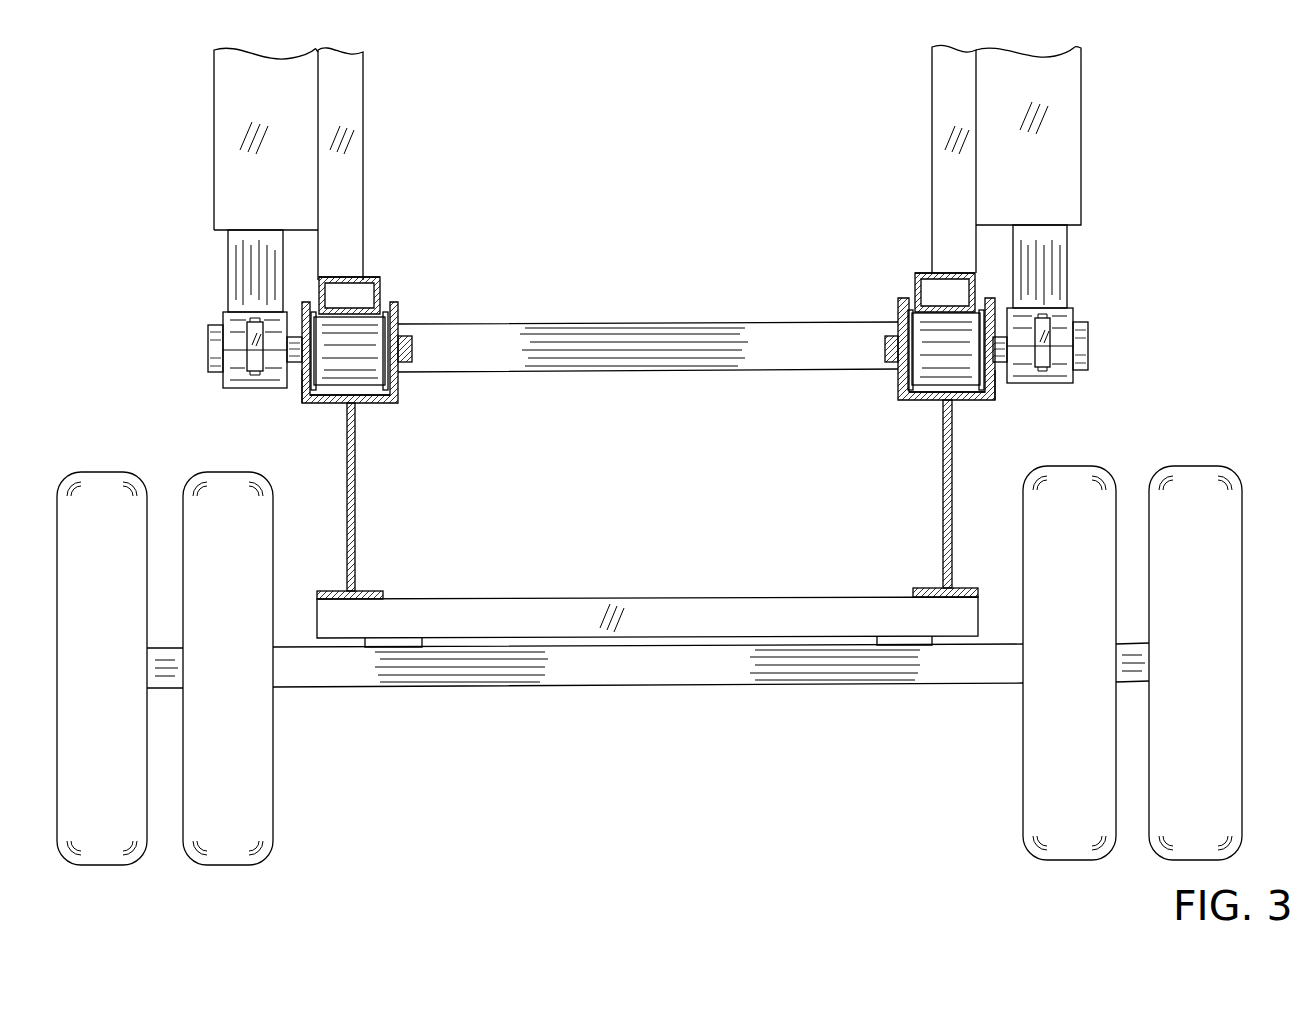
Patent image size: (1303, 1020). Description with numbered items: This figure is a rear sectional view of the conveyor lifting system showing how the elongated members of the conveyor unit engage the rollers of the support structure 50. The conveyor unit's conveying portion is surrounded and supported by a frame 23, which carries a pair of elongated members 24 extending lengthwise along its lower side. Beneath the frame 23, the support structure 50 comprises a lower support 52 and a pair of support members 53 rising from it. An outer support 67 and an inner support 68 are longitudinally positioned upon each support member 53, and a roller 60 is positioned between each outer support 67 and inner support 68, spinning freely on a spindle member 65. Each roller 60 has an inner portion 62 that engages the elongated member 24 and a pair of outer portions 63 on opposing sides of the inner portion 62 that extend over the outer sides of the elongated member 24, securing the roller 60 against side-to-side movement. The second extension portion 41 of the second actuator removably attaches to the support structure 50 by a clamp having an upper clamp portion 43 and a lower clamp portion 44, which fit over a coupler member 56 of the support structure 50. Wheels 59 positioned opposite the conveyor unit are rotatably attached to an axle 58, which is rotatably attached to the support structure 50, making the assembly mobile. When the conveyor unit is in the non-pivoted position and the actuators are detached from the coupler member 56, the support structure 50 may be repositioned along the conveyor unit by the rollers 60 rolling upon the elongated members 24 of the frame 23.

The frame 23 is at (363, 128).
The elongated members 24 is at (380, 283).
The second extension portion 41 is at (228, 251).
The upper clamp portion 43 is at (223, 316).
The lower clamp portion 44 is at (222, 385).
The support structure 50 is at (650, 598).
The lower support 52 is at (808, 598).
The support members 53 is at (356, 512).
The coupler member 56 is at (613, 323).
The axle 58 is at (667, 684).
The wheels 59 is at (1023, 790).
The rollers 60 is at (334, 384).
The inner portion 62 is at (370, 387).
The outer portions 63 is at (392, 303).
The spindle member 65 is at (415, 347).
The outer support 67 is at (302, 387).
The inner support 68 is at (400, 388).